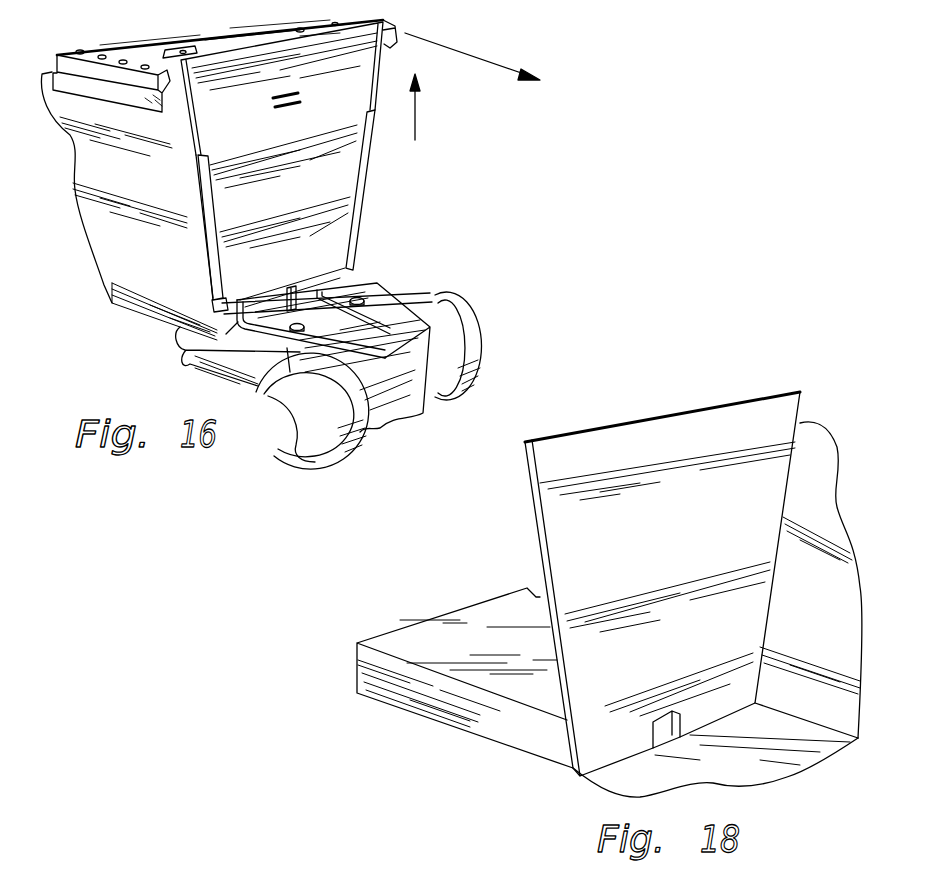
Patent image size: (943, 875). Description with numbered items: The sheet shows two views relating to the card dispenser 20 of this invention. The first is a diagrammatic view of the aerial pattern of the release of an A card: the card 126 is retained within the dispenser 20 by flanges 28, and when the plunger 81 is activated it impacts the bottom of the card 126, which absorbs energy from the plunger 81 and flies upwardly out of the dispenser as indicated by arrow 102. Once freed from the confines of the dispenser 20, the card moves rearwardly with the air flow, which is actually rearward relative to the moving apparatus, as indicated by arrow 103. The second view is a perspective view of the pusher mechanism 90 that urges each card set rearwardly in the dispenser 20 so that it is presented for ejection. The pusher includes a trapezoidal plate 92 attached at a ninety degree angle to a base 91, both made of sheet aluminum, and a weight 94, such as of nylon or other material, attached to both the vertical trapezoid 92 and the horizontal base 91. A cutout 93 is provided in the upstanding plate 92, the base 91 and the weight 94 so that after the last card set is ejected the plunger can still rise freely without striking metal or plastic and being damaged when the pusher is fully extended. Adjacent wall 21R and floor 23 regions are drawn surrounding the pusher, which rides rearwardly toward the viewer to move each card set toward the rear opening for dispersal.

In FIG. 16, the dispenser 20 is at (152, 256).
In FIG. 16, the flanges 28 is at (363, 190).
In FIG. 16, the plunger 81 is at (288, 284).
In FIG. 16, the arrow 102 is at (415, 123).
In FIG. 16, the arrow 103 is at (467, 50).
In FIG. 16, the card 126 is at (311, 204).
In FIG. 18, the pusher mechanism 90 is at (541, 584).
In FIG. 18, the base 91 is at (410, 714).
In FIG. 18, the trapezoidal plate 92 is at (680, 534).
In FIG. 18, the cutout 93 is at (671, 717).
In FIG. 18, the weight 94 is at (360, 672).
In FIG. 18, the right side wall 21R is at (838, 643).
In FIG. 18, the floor 23 is at (779, 772).